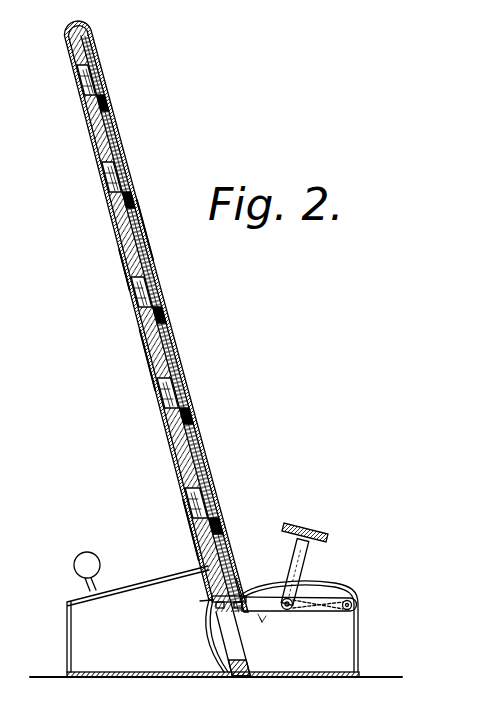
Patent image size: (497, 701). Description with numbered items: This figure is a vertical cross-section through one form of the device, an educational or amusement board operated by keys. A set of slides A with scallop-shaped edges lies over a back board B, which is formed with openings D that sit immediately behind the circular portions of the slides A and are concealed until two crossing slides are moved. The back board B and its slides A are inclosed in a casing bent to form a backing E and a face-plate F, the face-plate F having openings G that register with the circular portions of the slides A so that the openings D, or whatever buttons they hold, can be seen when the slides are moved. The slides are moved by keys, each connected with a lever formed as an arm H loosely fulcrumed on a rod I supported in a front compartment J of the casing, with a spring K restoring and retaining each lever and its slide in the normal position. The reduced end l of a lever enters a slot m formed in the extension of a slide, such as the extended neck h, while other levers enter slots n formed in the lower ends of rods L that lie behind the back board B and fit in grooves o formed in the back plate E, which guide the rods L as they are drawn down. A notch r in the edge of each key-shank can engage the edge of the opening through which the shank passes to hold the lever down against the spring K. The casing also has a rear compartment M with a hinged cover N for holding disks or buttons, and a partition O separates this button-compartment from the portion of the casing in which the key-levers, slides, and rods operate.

The slides A is at (130, 194).
The back board B is at (193, 463).
The openings D is at (95, 98).
The backing E is at (153, 377).
The face-plate F is at (105, 87).
The openings G is at (155, 250).
The arm H is at (323, 614).
The rod I is at (360, 606).
The front compartment J is at (353, 650).
The spring K is at (313, 602).
The rods L is at (195, 528).
The rear compartment M is at (216, 621).
The hinged cover N is at (140, 579).
The partition O is at (207, 643).
The grooves or depressions o is at (128, 277).
The neck h is at (248, 652).
The reduced end l is at (207, 615).
The slot m is at (273, 646).
The slots n is at (234, 580).
The notch r is at (295, 538).